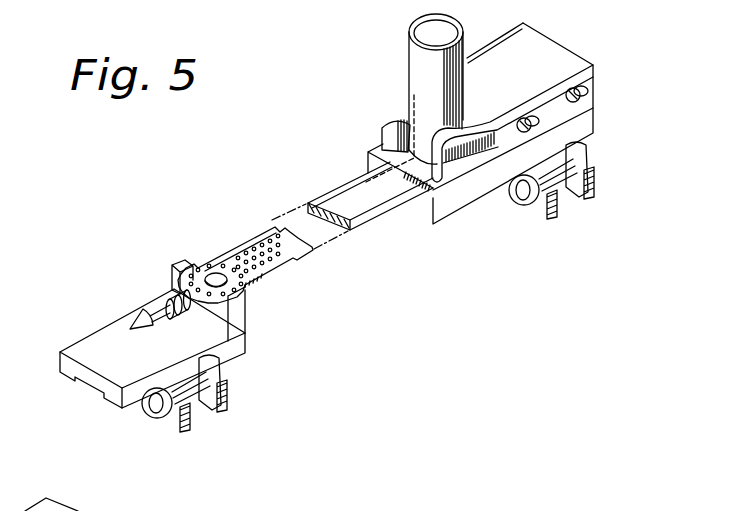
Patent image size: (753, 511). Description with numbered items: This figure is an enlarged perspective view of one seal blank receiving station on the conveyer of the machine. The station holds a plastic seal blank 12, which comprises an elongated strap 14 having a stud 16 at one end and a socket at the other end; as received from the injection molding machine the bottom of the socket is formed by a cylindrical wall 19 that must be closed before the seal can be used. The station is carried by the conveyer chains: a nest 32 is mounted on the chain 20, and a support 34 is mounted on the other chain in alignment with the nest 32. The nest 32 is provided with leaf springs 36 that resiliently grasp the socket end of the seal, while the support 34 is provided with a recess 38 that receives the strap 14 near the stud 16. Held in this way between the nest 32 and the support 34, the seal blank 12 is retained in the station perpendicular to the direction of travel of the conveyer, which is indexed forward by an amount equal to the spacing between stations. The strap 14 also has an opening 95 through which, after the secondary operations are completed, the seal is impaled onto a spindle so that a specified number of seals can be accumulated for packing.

The plastic seal blank 12 is at (376, 228).
The elongated strap 14 is at (284, 264).
The stud 16 is at (132, 312).
The cylindrical wall 19 is at (410, 50).
The chain 20 is at (540, 210).
The nest 32 is at (552, 65).
The support 34 is at (98, 340).
The leaf springs 36 is at (385, 133).
The recess 38 is at (227, 313).
The opening 95 is at (214, 273).